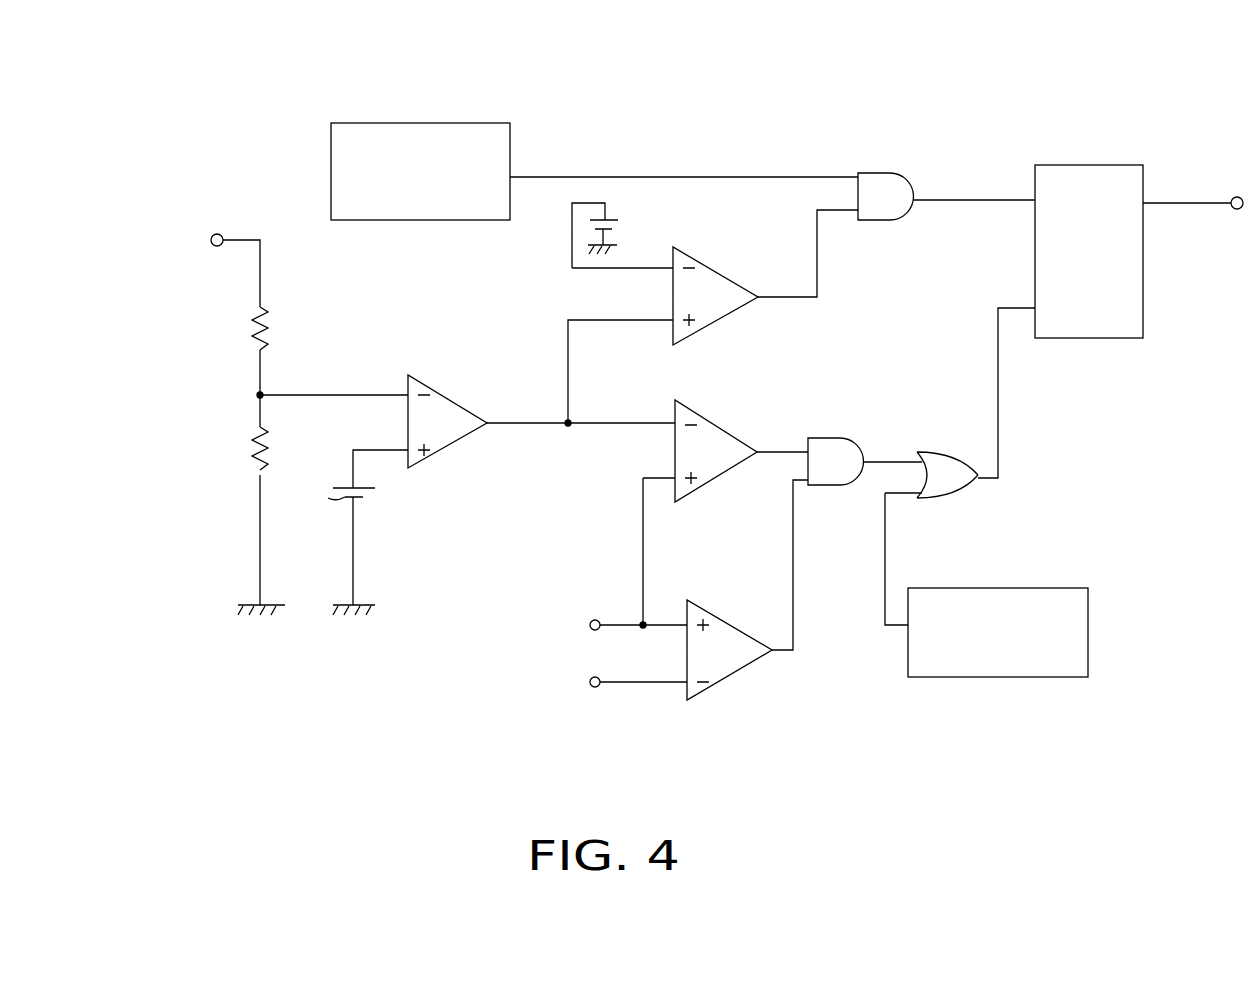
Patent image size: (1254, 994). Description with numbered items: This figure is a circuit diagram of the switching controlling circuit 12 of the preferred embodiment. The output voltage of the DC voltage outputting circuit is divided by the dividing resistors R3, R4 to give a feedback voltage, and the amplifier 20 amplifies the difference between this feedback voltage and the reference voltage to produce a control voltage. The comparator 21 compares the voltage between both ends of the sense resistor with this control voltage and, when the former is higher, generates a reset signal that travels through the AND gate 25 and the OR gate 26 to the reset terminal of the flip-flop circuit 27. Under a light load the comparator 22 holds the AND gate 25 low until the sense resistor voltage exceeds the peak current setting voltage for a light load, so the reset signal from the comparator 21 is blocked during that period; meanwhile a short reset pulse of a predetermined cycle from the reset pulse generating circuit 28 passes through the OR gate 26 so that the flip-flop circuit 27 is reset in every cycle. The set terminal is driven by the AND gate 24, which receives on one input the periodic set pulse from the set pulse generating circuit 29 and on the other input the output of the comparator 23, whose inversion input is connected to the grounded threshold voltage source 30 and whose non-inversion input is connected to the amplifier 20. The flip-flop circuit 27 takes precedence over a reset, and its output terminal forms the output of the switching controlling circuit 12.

The switching controlling circuit 12 is at (1053, 77).
The amplifier 20 is at (453, 402).
The comparator 21 is at (710, 422).
The comparator 22 is at (727, 620).
The comparator 23 is at (722, 274).
The AND gate 24 is at (898, 175).
The AND gate 25 is at (835, 438).
The OR gate 26 is at (952, 452).
The flip-flop circuit 27 is at (1103, 165).
The reset pulse generating circuit 28 is at (1050, 588).
The set pulse generating circuit 29 is at (458, 123).
The threshold voltage source 30 is at (610, 205).
The dividing resistor R3 is at (270, 328).
The dividing resistor R4 is at (270, 450).